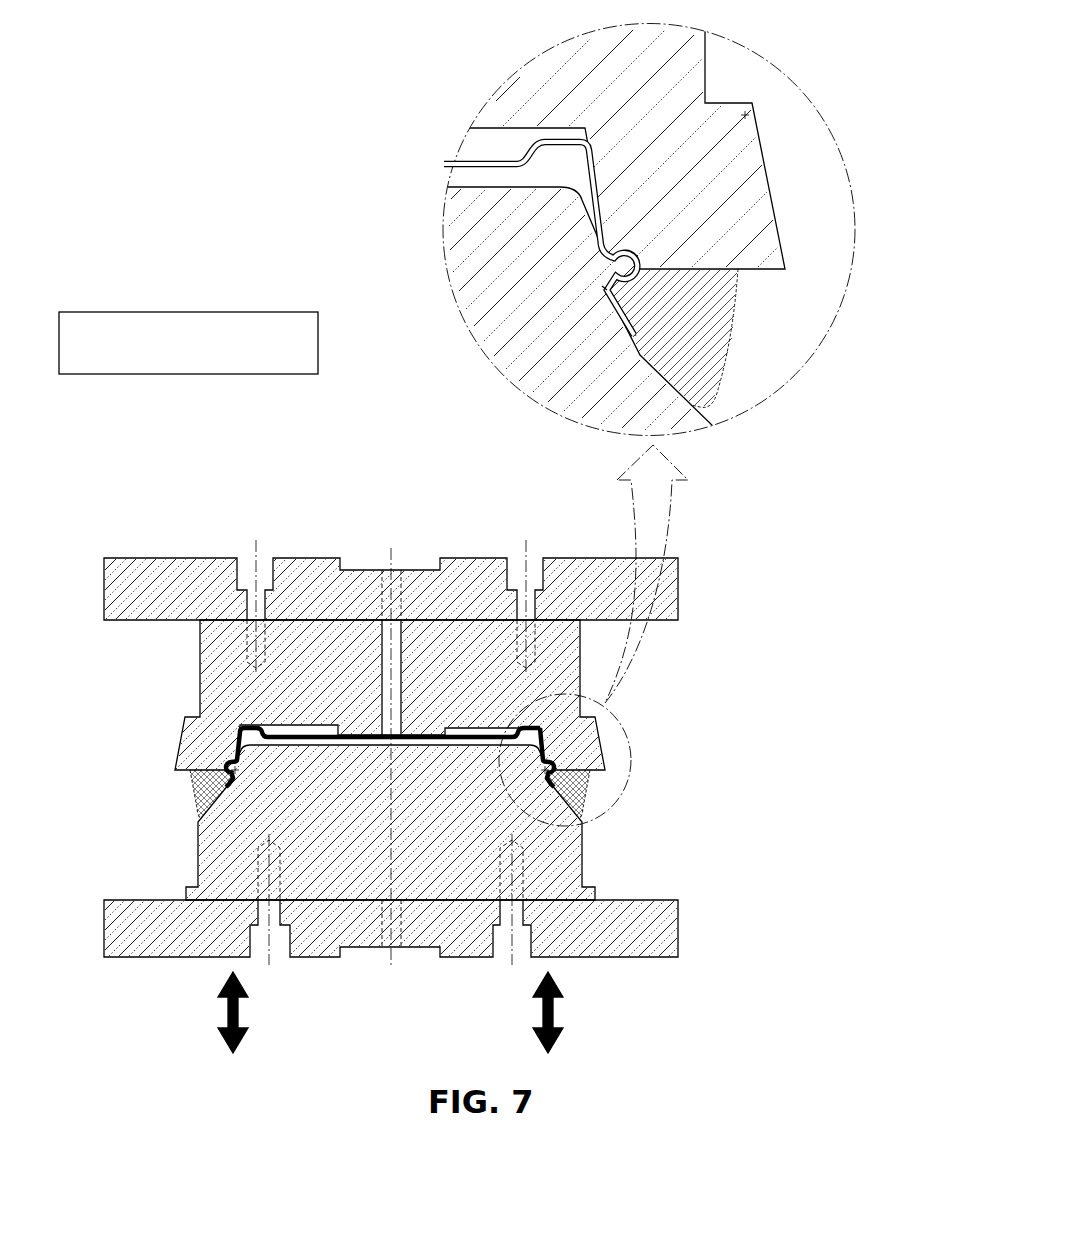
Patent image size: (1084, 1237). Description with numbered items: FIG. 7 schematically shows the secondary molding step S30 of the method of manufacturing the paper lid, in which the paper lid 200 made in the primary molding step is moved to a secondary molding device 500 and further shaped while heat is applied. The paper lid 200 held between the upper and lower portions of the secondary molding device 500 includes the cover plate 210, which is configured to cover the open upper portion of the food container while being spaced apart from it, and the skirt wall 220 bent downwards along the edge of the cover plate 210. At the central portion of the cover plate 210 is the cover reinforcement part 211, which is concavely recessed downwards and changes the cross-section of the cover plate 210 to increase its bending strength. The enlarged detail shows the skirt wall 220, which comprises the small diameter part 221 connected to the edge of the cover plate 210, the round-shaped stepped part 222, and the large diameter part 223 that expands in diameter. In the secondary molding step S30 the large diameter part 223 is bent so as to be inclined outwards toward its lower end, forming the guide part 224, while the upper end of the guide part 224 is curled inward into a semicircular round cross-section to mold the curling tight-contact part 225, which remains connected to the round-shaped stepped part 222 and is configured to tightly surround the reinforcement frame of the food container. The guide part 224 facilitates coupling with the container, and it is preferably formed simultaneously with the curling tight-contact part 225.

The paper lid 200 is at (283, 733).
The cover plate 210 is at (553, 138).
The cover reinforcement part 211 is at (487, 160).
The skirt wall 220 is at (686, 203).
The small diameter part 221 is at (598, 178).
The round-shaped stepped part 222 is at (617, 235).
The large diameter part 223 is at (618, 313).
The guide part 224 is at (740, 338).
The curling tight-contact part 225 is at (643, 268).
The secondary molding device 500 is at (420, 1021).
The secondary molding step S30 is at (318, 340).